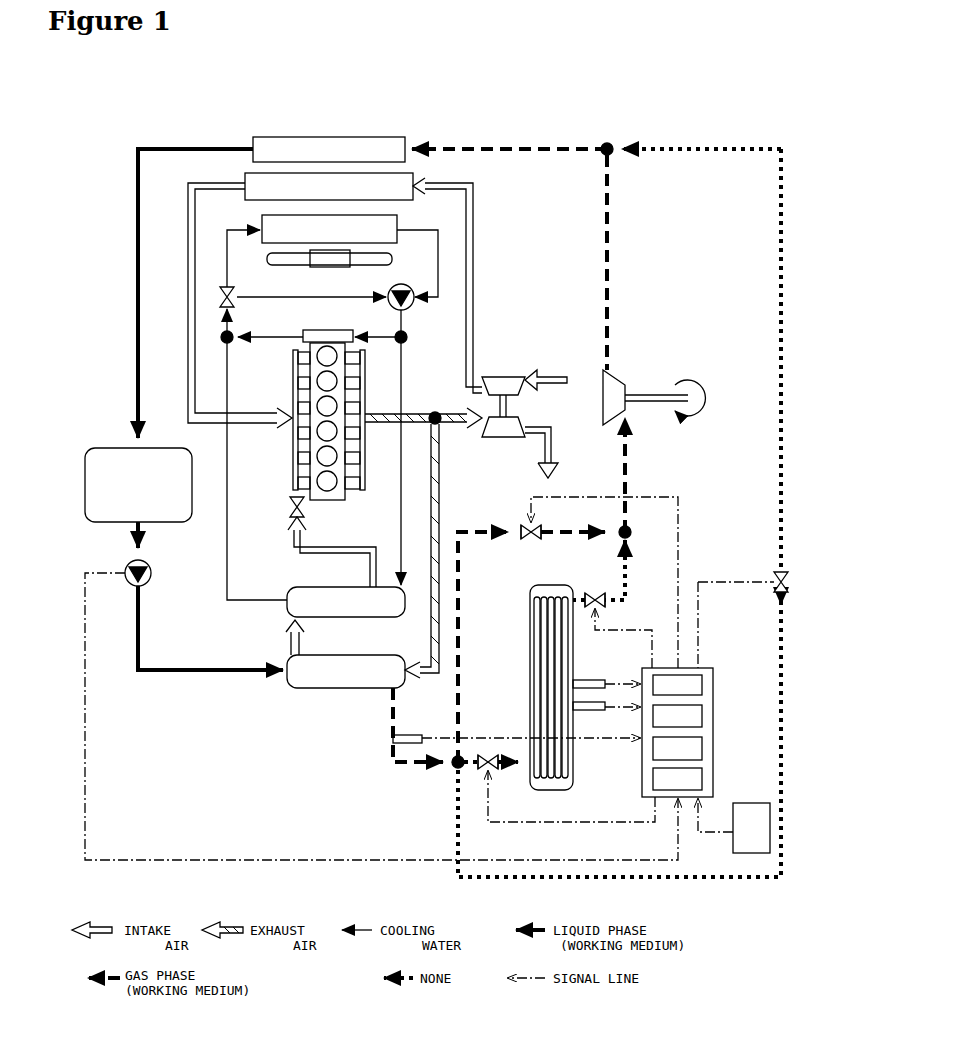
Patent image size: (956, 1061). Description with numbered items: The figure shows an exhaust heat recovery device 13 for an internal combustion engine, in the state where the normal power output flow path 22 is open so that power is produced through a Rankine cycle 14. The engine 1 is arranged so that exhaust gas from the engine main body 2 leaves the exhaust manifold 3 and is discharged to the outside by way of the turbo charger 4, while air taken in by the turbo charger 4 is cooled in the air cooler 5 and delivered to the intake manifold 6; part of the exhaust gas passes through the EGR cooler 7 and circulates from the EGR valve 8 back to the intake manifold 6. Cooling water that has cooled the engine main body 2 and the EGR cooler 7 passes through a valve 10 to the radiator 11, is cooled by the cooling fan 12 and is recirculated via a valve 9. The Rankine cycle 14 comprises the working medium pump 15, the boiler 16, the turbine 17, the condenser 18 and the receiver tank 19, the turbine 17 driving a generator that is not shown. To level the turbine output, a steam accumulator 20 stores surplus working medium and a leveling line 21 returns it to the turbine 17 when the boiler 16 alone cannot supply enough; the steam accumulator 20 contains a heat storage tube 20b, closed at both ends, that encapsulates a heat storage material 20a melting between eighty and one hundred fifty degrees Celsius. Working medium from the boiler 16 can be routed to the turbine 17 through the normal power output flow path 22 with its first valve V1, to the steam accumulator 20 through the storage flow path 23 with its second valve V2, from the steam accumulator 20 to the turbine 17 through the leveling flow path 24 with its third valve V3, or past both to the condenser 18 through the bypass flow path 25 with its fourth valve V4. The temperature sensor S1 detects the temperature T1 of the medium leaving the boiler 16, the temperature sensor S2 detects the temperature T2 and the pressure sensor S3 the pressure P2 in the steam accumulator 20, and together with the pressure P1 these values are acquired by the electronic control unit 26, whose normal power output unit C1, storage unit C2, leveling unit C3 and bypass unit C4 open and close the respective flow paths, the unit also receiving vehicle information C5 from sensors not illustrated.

The engine 1 is at (422, 326).
The engine main body 2 is at (322, 332).
The exhaust manifold 3 is at (365, 375).
The turbo charger 4 is at (507, 377).
The air cooler 5 is at (245, 180).
The intake manifold 6 is at (293, 376).
The EGR cooler 7 is at (297, 587).
The EGR valve 8 is at (290, 508).
The valve 9 is at (405, 285).
The valve 10 is at (219, 298).
The radiator 11 is at (262, 221).
The cooling fan 12 is at (300, 265).
The exhaust heat recovery device 13 is at (130, 137).
The Rankine cycle 14 is at (545, 146).
The working medium pump 15 is at (152, 573).
The boiler 16 is at (310, 690).
The turbine 17 is at (610, 374).
The condenser 18 is at (383, 137).
The receiver tank 19 is at (120, 447).
The steam accumulator 20 is at (530, 600).
The heat storage material 20a is at (540, 650).
The heat storage tube 20b is at (530, 640).
The leveling line 21 is at (552, 580).
The normal power output flow path 22 is at (476, 529).
The storage flow path 23 is at (458, 775).
The leveling flow path 24 is at (628, 575).
The bypass flow path 25 is at (742, 147).
The electronic control unit 26 is at (713, 697).
The first valve V1 is at (527, 525).
The second valve V2 is at (488, 754).
The third valve V3 is at (594, 593).
The fourth valve V4 is at (789, 582).
The temperature sensor S1 is at (412, 733).
The temperature sensor S2 is at (590, 680).
The pressure sensor S3 is at (590, 712).
The temperature T1 is at (412, 744).
The temperature T2 is at (614, 683).
The pressure P1 is at (240, 858).
The pressure P2 is at (620, 708).
The normal power output unit C1 is at (702, 683).
The storage unit C2 is at (702, 718).
The leveling unit C3 is at (702, 750).
The bypass unit C4 is at (702, 779).
The vehicle information C5 is at (770, 838).